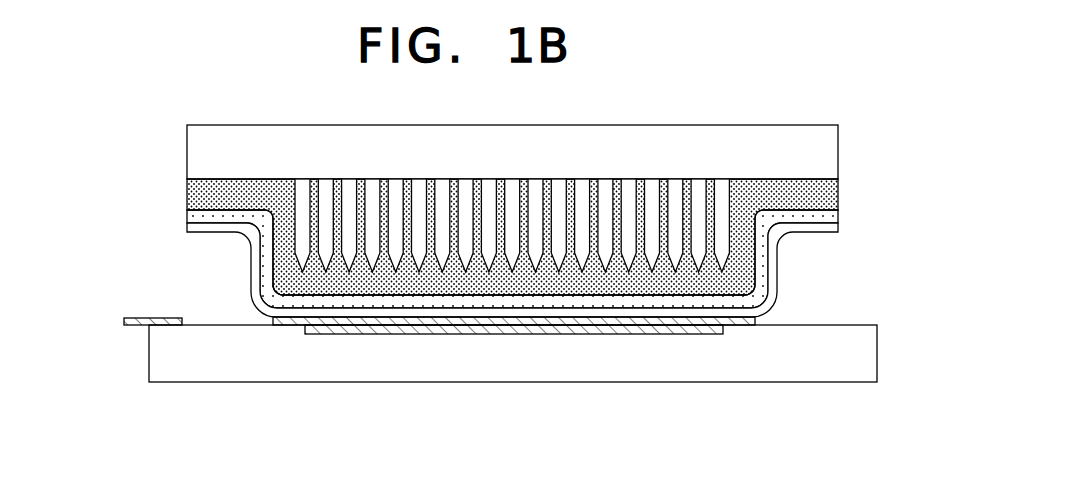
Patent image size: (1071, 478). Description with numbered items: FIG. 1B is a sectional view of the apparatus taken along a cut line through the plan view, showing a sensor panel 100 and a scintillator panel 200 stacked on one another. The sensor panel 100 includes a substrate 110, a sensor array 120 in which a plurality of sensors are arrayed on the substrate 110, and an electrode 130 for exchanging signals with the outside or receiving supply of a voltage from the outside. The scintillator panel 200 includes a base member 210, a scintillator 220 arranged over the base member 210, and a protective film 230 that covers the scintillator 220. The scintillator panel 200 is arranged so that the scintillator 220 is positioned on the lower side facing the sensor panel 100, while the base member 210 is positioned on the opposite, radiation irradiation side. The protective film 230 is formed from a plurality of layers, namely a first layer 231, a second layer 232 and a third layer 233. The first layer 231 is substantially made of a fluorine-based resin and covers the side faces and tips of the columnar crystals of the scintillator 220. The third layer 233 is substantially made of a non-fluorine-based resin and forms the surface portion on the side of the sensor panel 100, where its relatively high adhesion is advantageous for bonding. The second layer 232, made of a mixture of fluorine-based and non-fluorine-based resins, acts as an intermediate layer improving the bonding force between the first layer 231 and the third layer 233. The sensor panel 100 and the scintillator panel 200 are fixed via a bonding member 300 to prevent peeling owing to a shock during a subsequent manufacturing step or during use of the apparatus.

The sensor panel 100 is at (468, 349).
The substrate 110 is at (177, 373).
The sensor array 120 is at (332, 335).
The electrode 130 is at (153, 299).
The scintillator panel 200 is at (457, 200).
The base member 210 is at (215, 131).
The scintillator 220 is at (677, 185).
The protective film 230 is at (491, 201).
The first layer 231 is at (793, 181).
The second layer 232 is at (827, 218).
The third layer 233 is at (803, 228).
The bonding member 300 is at (742, 327).